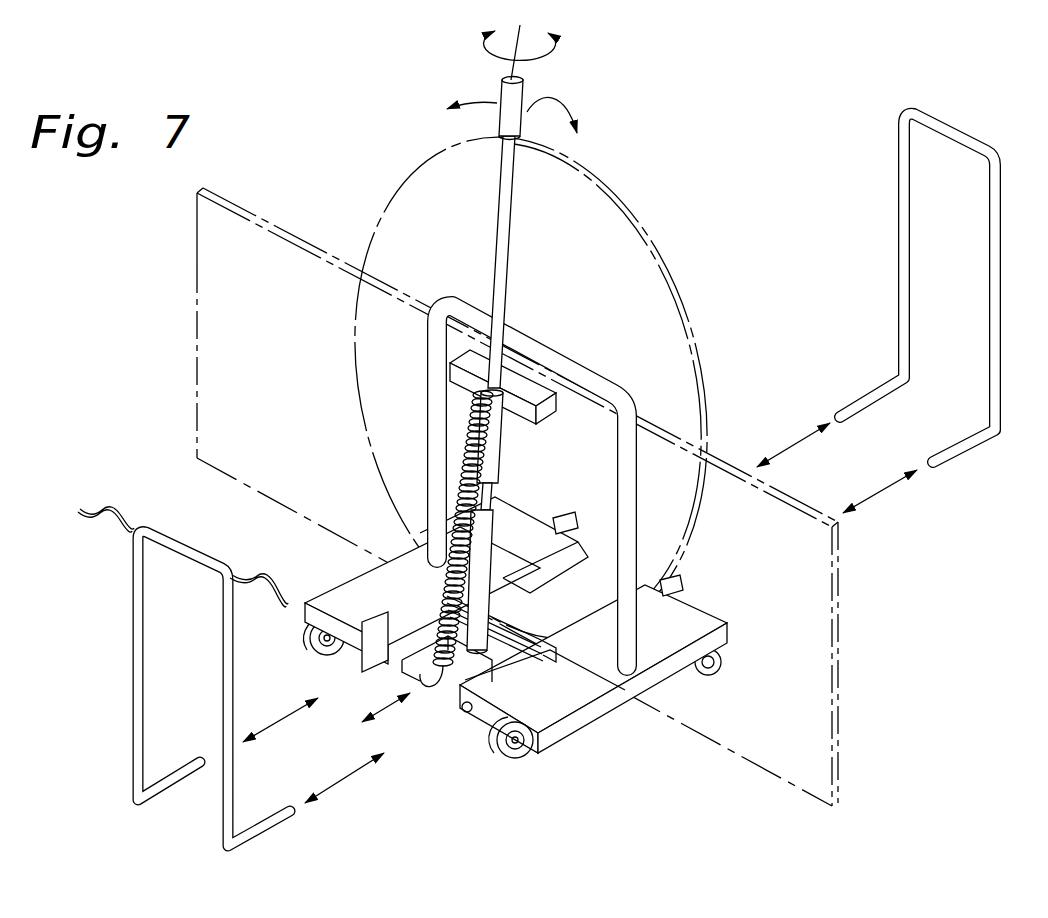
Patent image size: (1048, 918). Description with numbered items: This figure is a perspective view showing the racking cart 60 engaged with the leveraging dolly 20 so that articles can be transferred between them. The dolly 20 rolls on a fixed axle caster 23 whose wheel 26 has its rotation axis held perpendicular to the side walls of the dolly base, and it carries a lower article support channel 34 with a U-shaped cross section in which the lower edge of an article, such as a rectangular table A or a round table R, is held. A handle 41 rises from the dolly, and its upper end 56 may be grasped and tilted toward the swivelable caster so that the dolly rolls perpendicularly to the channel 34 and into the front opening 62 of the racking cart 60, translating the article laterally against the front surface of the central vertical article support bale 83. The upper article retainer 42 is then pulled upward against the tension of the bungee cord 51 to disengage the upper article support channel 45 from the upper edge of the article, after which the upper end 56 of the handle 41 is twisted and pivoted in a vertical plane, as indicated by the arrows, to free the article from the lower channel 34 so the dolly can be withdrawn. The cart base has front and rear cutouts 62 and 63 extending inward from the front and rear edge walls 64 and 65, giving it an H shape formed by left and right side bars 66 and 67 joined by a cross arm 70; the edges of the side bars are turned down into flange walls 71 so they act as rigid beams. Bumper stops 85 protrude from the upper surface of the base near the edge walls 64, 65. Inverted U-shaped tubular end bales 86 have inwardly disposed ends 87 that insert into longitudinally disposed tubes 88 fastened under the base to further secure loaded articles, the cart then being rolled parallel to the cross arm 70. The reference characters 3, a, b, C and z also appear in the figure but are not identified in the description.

The bolt 3 is at (450, 680).
The leveraging dolly 20 is at (505, 462).
The fixed axle caster 23 is at (445, 688).
The wheel 26 is at (497, 642).
The lower article support channel 34 is at (555, 650).
The handle 41 is at (497, 218).
The upper article retainer 42 is at (530, 387).
The upper article support channel 45 is at (537, 413).
The bungee cord 51 is at (462, 465).
The upper end 56 is at (500, 86).
The racking cart 60 is at (287, 550).
The front cutout 62 is at (380, 677).
The rear cutout 63 is at (578, 609).
The front edge wall 64 is at (518, 742).
The rear edge wall 65 is at (707, 604).
The left side bar 66 is at (326, 594).
The right side bar 67 is at (627, 670).
The cross arm 70 is at (547, 603).
The flange walls 71 is at (440, 537).
The central vertical article support bale 83 is at (594, 378).
The bumper stops 85 is at (570, 513).
The end bales 86 is at (978, 140).
The inwardly disposed ends 87 is at (865, 412).
The longitudinally disposed tubes 88 is at (372, 655).
The rectangular table A is at (245, 213).
The round table R is at (643, 230).
The direction a is at (525, 110).
The direction b is at (478, 40).
The direction C is at (370, 697).
The axis z is at (573, 693).